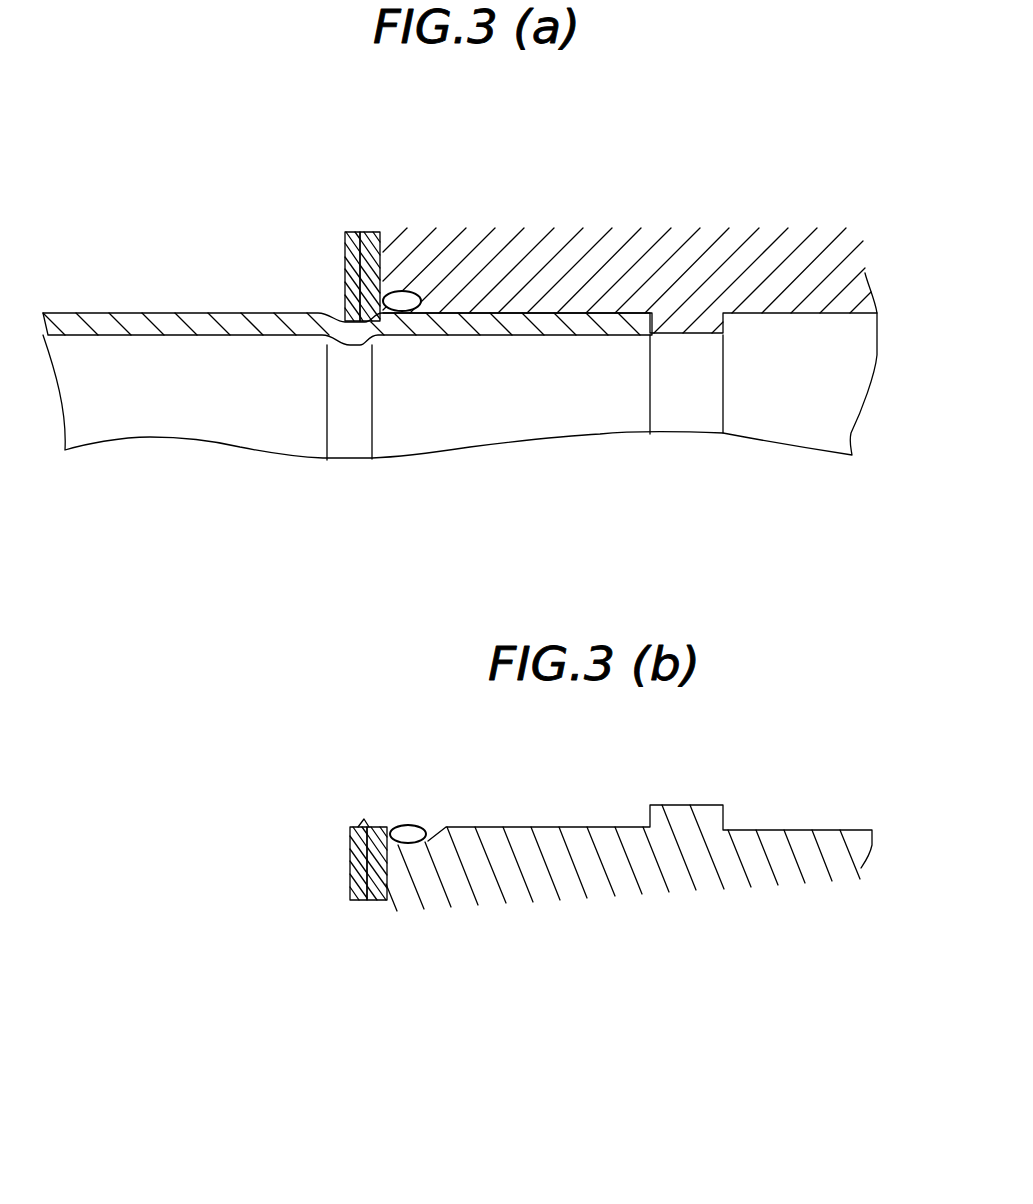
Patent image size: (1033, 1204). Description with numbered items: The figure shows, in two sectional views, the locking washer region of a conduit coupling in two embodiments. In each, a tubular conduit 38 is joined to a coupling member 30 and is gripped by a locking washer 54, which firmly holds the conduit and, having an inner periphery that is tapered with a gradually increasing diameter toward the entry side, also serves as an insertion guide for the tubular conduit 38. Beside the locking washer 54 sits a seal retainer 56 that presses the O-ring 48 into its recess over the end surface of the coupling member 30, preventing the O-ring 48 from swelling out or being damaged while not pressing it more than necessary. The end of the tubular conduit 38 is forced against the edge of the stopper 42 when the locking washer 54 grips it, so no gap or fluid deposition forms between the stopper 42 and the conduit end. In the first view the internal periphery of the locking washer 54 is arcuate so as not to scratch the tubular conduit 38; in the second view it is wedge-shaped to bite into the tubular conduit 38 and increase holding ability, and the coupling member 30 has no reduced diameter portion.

In FIG. 3a, the coupling member 30 is at (696, 229).
In FIG. 3a, the tubular conduit 38 is at (207, 313).
In FIG. 3a, the stopper 42 is at (700, 337).
In FIG. 3b, the stopper 42 is at (712, 805).
In FIG. 3a, the O-ring 48 is at (407, 311).
In FIG. 3b, the O-ring 48 is at (412, 825).
In FIG. 3a, the locking washer 54 is at (345, 247).
In FIG. 3b, the locking washer 54 is at (352, 885).
In FIG. 3a, the seal retainer 56 is at (374, 232).
In FIG. 3b, the seal retainer 56 is at (377, 902).